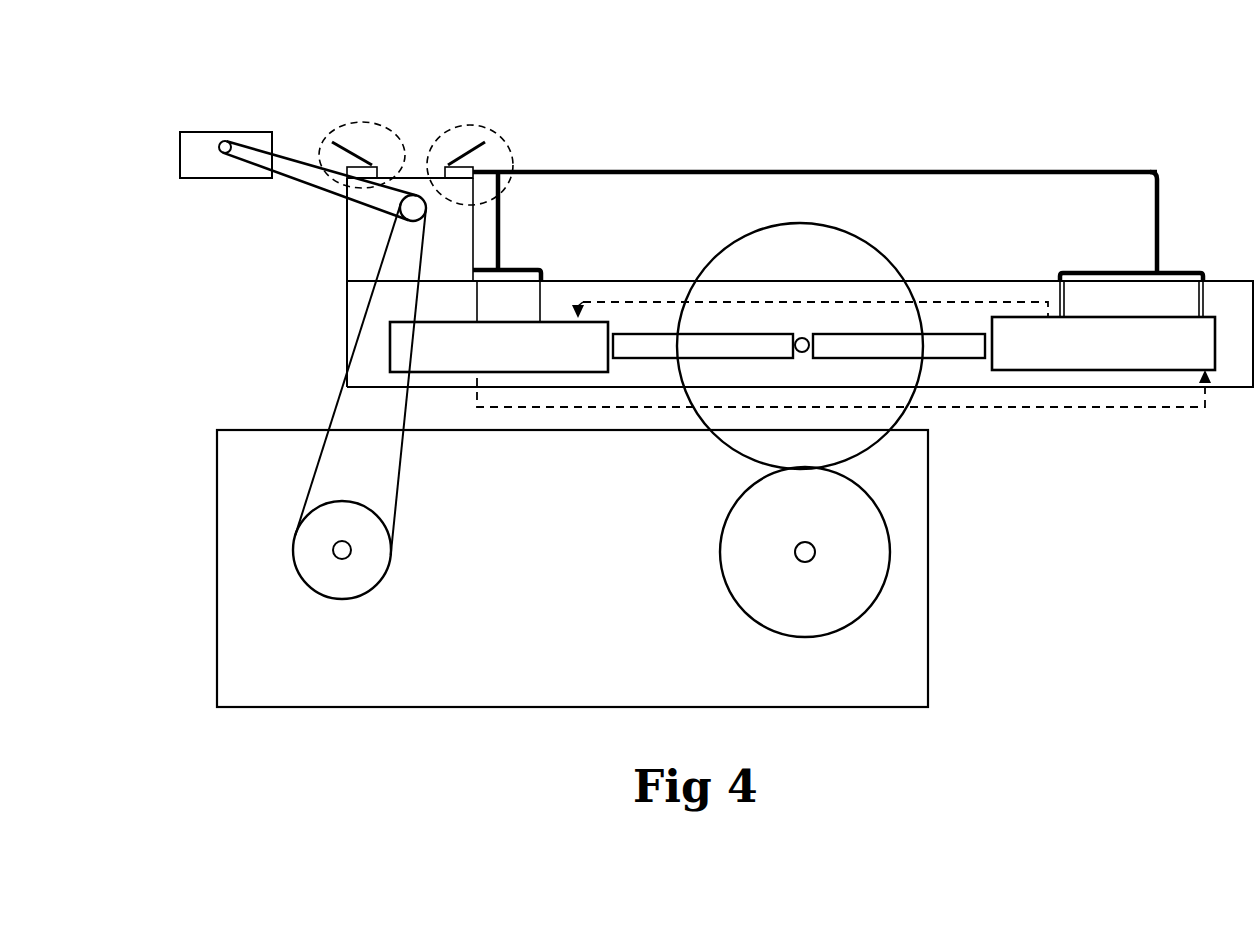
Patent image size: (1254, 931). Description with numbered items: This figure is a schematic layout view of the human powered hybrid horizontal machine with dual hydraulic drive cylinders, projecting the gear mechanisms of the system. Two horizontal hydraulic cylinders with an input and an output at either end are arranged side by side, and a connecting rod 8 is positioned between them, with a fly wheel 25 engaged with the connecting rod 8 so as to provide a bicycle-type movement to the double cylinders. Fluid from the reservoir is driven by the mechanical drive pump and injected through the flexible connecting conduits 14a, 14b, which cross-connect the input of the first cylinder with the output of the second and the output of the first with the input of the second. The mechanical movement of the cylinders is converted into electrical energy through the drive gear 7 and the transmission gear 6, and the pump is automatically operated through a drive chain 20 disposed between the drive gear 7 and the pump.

The transmission gear 6 is at (882, 562).
The drive gear 7 is at (928, 612).
The connecting rod 8 is at (652, 334).
The first flexible connecting conduit 14a is at (498, 232).
The second flexible connecting conduit 14b is at (1157, 205).
The drive chain 20 is at (343, 402).
The fly wheel 25 is at (830, 223).